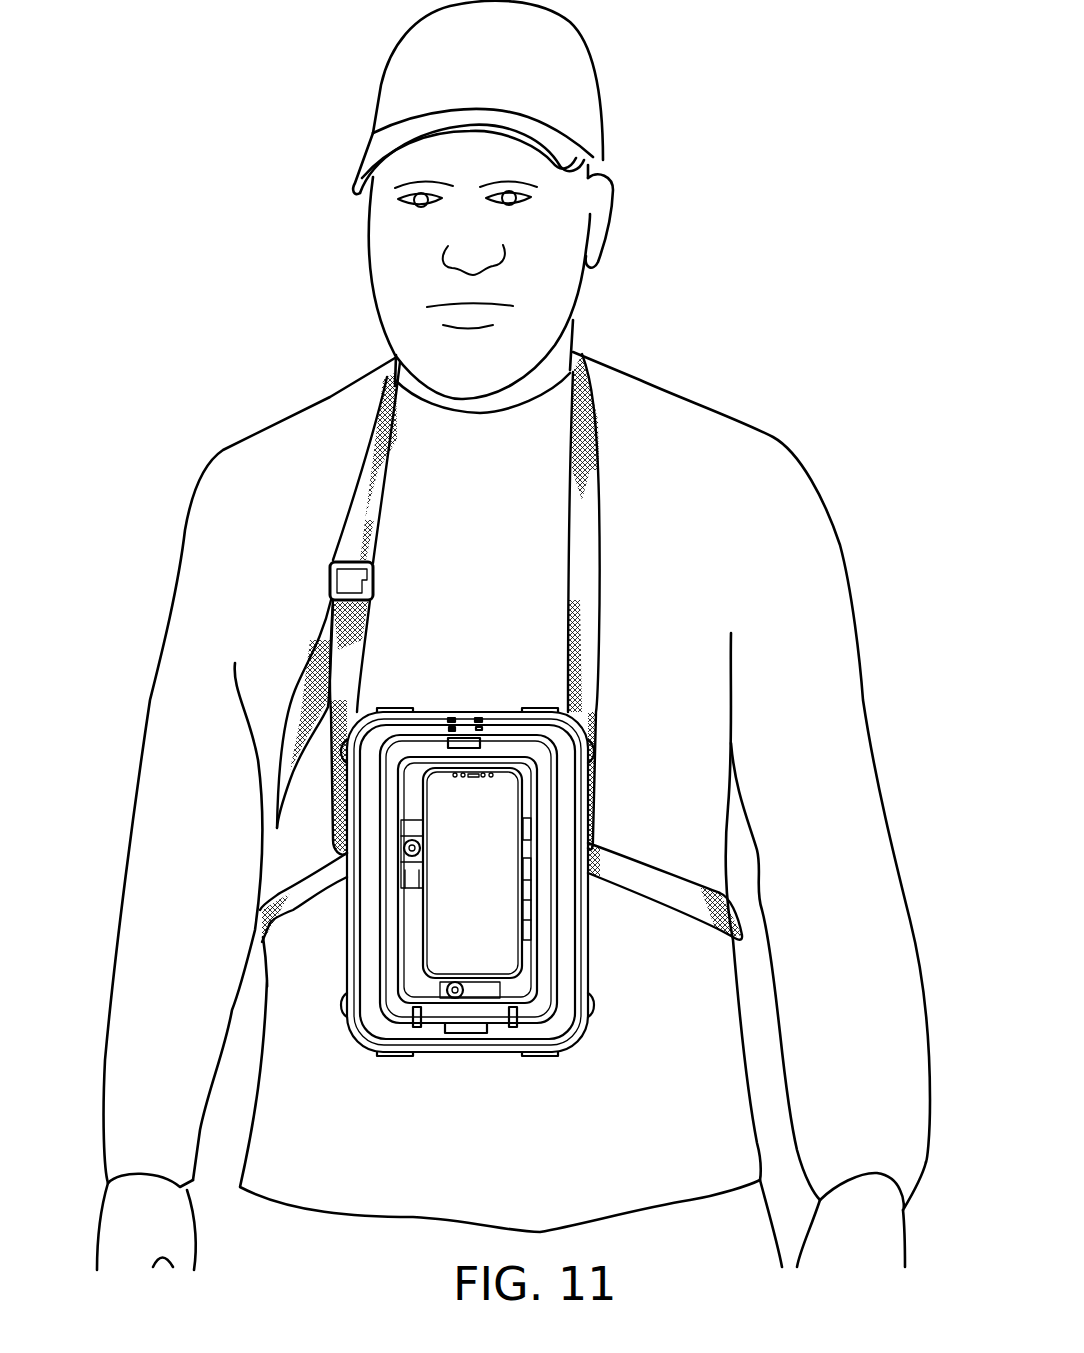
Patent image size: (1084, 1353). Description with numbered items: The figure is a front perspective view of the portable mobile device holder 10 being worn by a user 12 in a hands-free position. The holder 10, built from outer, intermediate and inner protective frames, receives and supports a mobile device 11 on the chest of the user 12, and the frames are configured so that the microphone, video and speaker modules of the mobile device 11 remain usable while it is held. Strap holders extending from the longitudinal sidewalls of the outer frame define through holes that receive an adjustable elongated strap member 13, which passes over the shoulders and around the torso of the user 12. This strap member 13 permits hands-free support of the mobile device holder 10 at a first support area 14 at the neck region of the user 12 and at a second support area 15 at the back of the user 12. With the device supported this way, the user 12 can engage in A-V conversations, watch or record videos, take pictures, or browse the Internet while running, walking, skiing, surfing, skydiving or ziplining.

The portable mobile device holder 10 is at (393, 980).
The mobile device 11 is at (498, 847).
The user 12 is at (707, 433).
The adjustable elongated strap member 13 is at (365, 500).
The first support area 14 is at (597, 420).
The second support area 15 is at (287, 902).